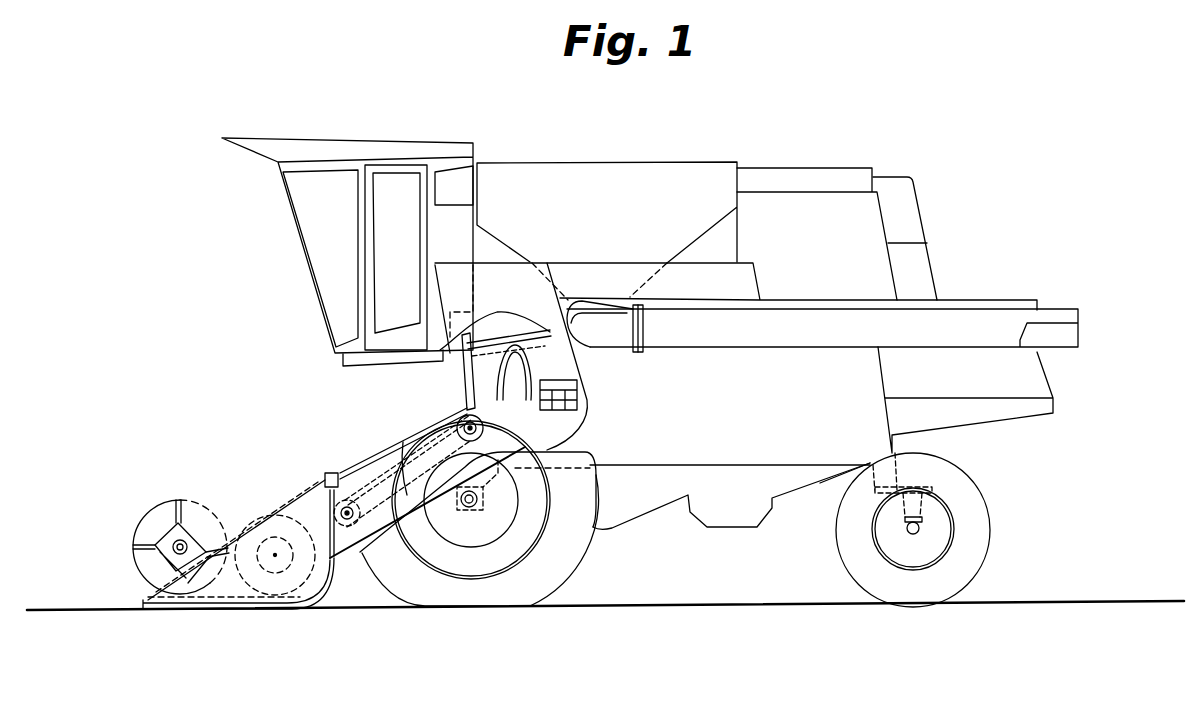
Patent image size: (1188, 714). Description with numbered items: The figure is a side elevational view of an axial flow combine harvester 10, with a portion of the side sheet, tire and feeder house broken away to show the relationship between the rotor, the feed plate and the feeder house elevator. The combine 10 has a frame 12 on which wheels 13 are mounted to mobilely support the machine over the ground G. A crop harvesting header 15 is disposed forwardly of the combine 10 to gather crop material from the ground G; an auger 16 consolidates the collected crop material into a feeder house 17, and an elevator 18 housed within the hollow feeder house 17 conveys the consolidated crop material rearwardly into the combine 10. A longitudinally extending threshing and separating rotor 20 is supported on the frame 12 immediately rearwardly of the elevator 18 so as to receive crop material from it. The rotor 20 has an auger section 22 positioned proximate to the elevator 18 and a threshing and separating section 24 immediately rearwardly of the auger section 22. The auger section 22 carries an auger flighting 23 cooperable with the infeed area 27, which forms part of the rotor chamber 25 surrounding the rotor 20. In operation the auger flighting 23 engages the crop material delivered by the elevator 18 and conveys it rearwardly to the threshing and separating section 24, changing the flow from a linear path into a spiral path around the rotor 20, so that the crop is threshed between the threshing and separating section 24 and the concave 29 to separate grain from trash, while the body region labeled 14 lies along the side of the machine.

The combine harvester 10 is at (830, 88).
The frame 12 is at (877, 443).
The wheels 13 is at (555, 574).
The threshing and separating mechanism 14 is at (760, 404).
The crop harvesting header 15 is at (213, 499).
The auger 16 is at (295, 517).
The feeder house 17 is at (372, 458).
The elevator 18 is at (427, 440).
The threshing and separating rotor 20 is at (533, 405).
The auger section 22 is at (462, 366).
The auger flighting 23 is at (583, 488).
The threshing and separating section 24 is at (565, 365).
The rotor chamber 25 is at (547, 341).
The infeed area 27 is at (502, 443).
The concave 29 is at (580, 437).
The ground G is at (1102, 602).